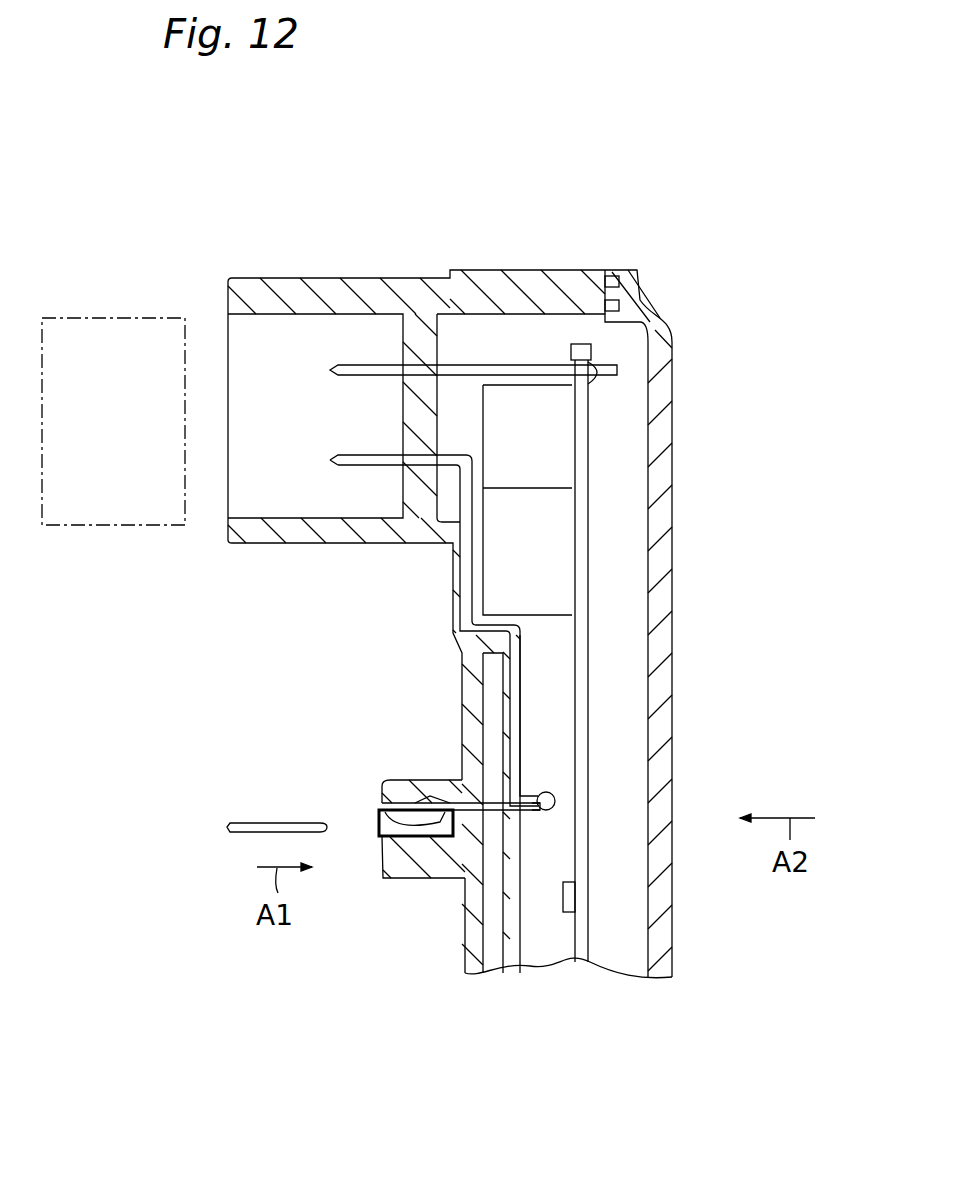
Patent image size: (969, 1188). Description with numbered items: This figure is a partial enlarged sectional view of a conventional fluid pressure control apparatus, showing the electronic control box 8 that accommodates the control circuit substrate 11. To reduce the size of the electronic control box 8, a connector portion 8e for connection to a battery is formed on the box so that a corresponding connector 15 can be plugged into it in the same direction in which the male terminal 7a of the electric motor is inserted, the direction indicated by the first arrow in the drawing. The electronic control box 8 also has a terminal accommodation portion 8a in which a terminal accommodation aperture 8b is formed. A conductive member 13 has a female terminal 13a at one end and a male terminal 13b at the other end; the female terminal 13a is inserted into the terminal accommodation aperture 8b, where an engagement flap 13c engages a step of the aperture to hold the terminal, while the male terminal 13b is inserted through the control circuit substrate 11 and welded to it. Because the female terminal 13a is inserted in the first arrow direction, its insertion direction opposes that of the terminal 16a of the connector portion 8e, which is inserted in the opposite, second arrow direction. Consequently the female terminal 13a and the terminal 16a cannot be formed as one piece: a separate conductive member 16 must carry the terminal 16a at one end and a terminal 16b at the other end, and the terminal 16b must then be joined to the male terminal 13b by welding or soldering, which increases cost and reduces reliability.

The electronic control box 8 is at (570, 270).
The connector portion 8e is at (322, 300).
The terminal accommodation portion 8a is at (388, 775).
The terminal accommodation aperture 8b is at (380, 833).
The male terminal 7a is at (306, 820).
The control circuit substrate 11 is at (585, 418).
The conductive member 13 is at (530, 815).
The female terminal 13a is at (405, 780).
The male terminal 13b is at (560, 810).
The engagement flap 13c is at (428, 790).
The connector 15 is at (110, 315).
The conductive member 16 is at (520, 658).
The terminal 16a is at (352, 447).
The terminal 16b is at (544, 796).